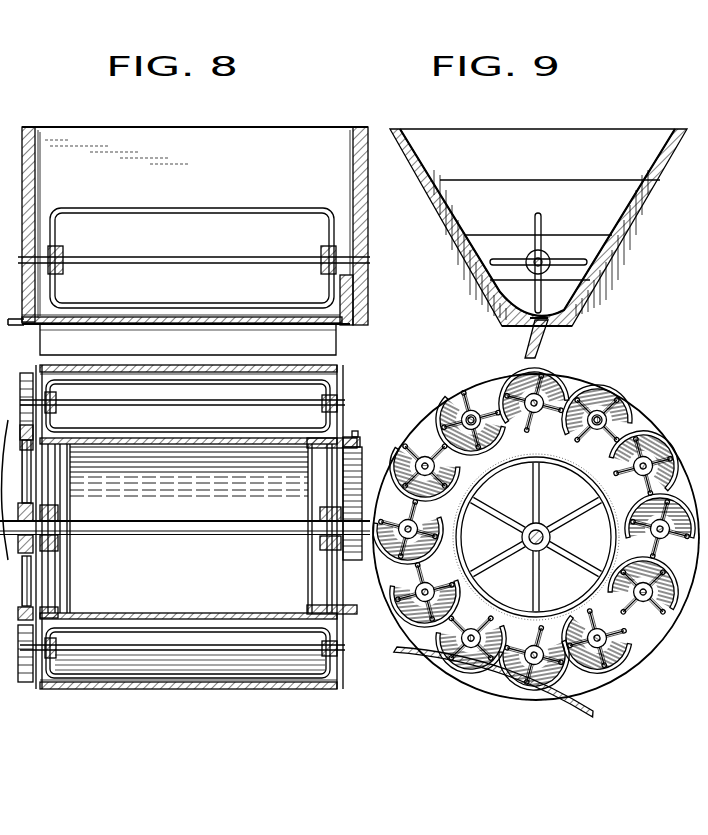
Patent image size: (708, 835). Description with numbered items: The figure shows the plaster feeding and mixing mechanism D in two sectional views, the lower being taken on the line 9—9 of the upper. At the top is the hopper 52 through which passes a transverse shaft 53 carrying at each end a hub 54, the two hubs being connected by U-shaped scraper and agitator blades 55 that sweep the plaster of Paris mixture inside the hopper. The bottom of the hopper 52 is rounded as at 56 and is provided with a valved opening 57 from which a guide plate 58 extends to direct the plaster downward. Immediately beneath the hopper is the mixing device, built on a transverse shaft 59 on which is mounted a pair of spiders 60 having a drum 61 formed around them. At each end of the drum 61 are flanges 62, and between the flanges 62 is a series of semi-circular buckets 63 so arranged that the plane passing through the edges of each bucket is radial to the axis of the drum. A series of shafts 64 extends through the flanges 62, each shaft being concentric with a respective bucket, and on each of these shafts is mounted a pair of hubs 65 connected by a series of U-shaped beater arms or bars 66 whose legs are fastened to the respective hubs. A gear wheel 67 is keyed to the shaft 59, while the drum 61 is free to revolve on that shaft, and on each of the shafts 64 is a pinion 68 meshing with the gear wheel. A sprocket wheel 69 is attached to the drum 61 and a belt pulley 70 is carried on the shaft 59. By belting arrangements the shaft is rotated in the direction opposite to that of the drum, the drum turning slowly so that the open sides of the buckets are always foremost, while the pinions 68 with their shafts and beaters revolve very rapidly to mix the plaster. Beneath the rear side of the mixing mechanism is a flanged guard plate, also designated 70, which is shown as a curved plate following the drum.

In FIG. 8, the hopper 52 is at (72, 128).
In FIG. 9, the hopper 52 is at (445, 215).
In FIG. 8, the transverse shaft 53 is at (110, 258).
In FIG. 9, the transverse shaft 53 is at (533, 264).
In FIG. 8, the hub 54 is at (62, 252).
In FIG. 9, the hub 54 is at (548, 252).
In FIG. 8, the U-shaped scraper and agitator blades 55 is at (206, 209).
In FIG. 9, the U-shaped scraper and agitator blades 55 is at (535, 215).
In FIG. 8, the rounded bottom 56 is at (352, 310).
In FIG. 9, the rounded bottom 56 is at (577, 317).
In FIG. 8, the valved opening 57 is at (57, 323).
In FIG. 9, the valved opening 57 is at (537, 325).
In FIG. 8, the guide plate 58 is at (330, 344).
In FIG. 9, the guide plate 58 is at (542, 345).
In FIG. 8, the transverse shaft 59 is at (172, 531).
In FIG. 9, the transverse shaft 59 is at (545, 527).
In FIG. 8, the spiders 60 is at (50, 592).
In FIG. 9, the spiders 60 is at (497, 556).
In FIG. 8, the drum 61 is at (226, 613).
In FIG. 9, the drum 61 is at (558, 612).
In FIG. 8, the flanges 62 is at (342, 377).
In FIG. 9, the flanges 62 is at (640, 420).
In FIG. 8, the semi-circular buckets 63 is at (330, 367).
In FIG. 9, the semi-circular buckets 63 is at (478, 392).
In FIG. 8, the shafts 64 is at (200, 404).
In FIG. 9, the shafts 64 is at (647, 450).
In FIG. 8, the hubs 65 is at (55, 410).
In FIG. 9, the hubs 65 is at (603, 392).
In FIG. 8, the U-shaped beater arms or bars 66 is at (152, 432).
In FIG. 9, the U-shaped beater arms or bars 66 is at (450, 410).
In FIG. 8, the gear wheel 67 is at (20, 617).
In FIG. 8, the pinion 68 is at (24, 378).
In FIG. 8, the sprocket wheel 69 is at (356, 436).
In FIG. 9, the belt pulley 70 is at (448, 690).
In FIG. 8, the plaster feeding and mixing mechanism D is at (6, 428).
In FIG. 9, the plaster feeding and mixing mechanism D is at (550, 230).
In FIG. 8, the section line 9- 9 is at (188, 150).